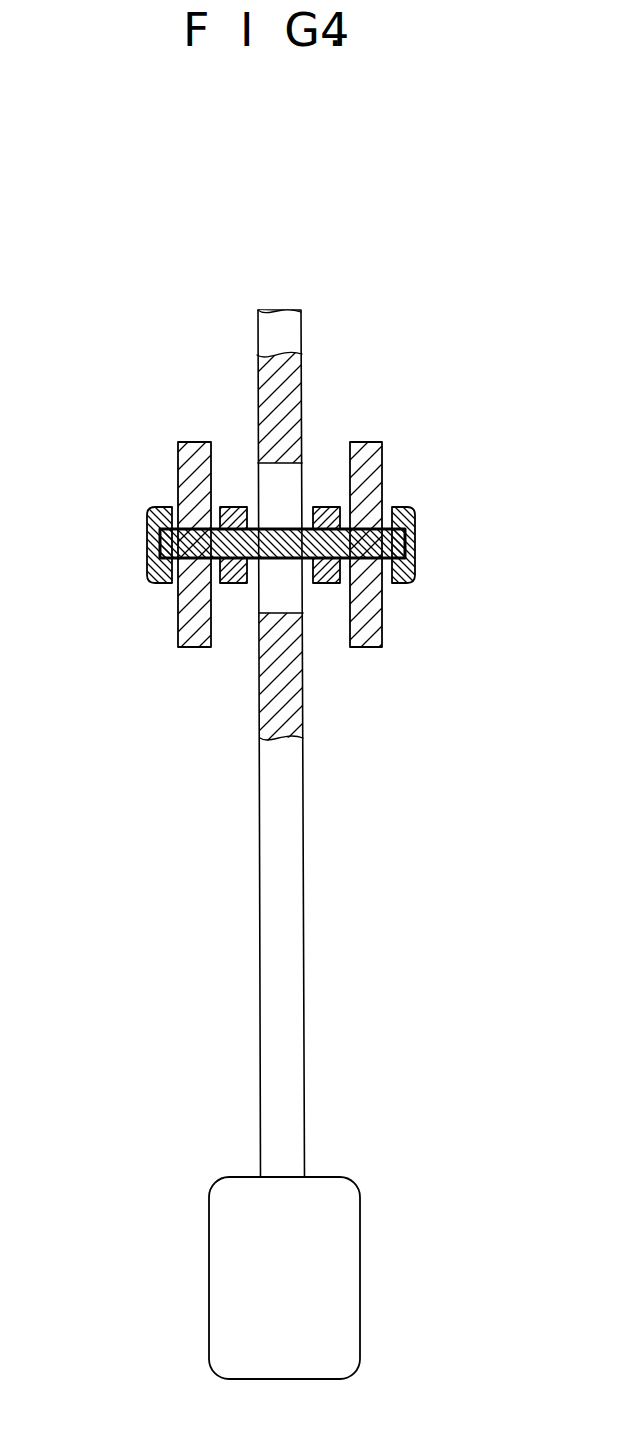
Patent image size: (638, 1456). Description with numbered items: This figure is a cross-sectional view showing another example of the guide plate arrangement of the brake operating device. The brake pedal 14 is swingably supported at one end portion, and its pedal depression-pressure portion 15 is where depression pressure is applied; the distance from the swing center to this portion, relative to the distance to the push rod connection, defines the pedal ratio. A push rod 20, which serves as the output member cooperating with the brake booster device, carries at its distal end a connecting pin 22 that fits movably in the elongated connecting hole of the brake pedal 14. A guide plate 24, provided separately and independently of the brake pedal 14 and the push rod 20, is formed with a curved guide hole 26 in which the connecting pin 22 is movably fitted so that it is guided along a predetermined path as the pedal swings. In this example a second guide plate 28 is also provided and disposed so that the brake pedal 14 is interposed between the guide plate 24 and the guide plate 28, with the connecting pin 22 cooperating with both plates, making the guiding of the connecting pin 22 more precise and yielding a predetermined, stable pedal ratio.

The brake pedal 14 is at (258, 729).
The pedal depression-pressure portion 15 is at (336, 1276).
The push rod 20 is at (240, 507).
The connecting pin 22 is at (146, 543).
The guide plate 24 is at (371, 442).
The guide hole 26 is at (378, 540).
The guide plate 28 is at (196, 442).